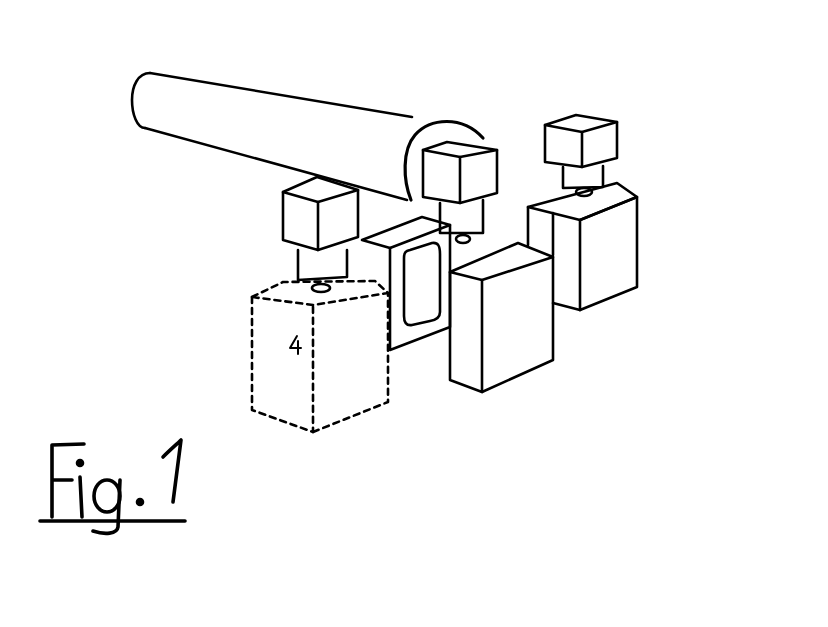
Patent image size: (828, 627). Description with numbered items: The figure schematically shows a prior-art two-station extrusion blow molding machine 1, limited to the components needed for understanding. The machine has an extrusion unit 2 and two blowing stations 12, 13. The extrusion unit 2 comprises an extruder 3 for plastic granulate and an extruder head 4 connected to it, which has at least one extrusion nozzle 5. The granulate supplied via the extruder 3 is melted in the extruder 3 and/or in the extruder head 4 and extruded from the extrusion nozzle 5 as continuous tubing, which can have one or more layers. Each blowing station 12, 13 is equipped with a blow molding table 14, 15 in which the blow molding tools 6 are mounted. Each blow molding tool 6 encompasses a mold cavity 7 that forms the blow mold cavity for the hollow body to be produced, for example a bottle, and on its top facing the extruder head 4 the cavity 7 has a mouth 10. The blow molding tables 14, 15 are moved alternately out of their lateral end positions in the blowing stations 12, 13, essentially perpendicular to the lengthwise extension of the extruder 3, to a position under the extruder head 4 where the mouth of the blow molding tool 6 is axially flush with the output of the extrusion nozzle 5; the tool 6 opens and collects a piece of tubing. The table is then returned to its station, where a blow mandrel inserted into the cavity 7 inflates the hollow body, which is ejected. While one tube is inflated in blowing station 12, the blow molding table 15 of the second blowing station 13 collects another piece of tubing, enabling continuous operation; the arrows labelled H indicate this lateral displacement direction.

The extrusion blow molding machine 1 is at (143, 240).
The extrusion unit 2 is at (492, 100).
The extruder 3 is at (289, 100).
The extruder head 4 is at (458, 156).
The extrusion nozzle 5 is at (462, 246).
The blow molding tool 6 is at (510, 343).
The mold cavity 7 is at (420, 277).
The mouth 10 is at (418, 238).
The blowing station 12 is at (293, 221).
The blowing station 13 is at (606, 138).
The blow molding table 14 is at (368, 283).
The blow molding table 15 is at (644, 213).
The direction of displacement H is at (591, 324).